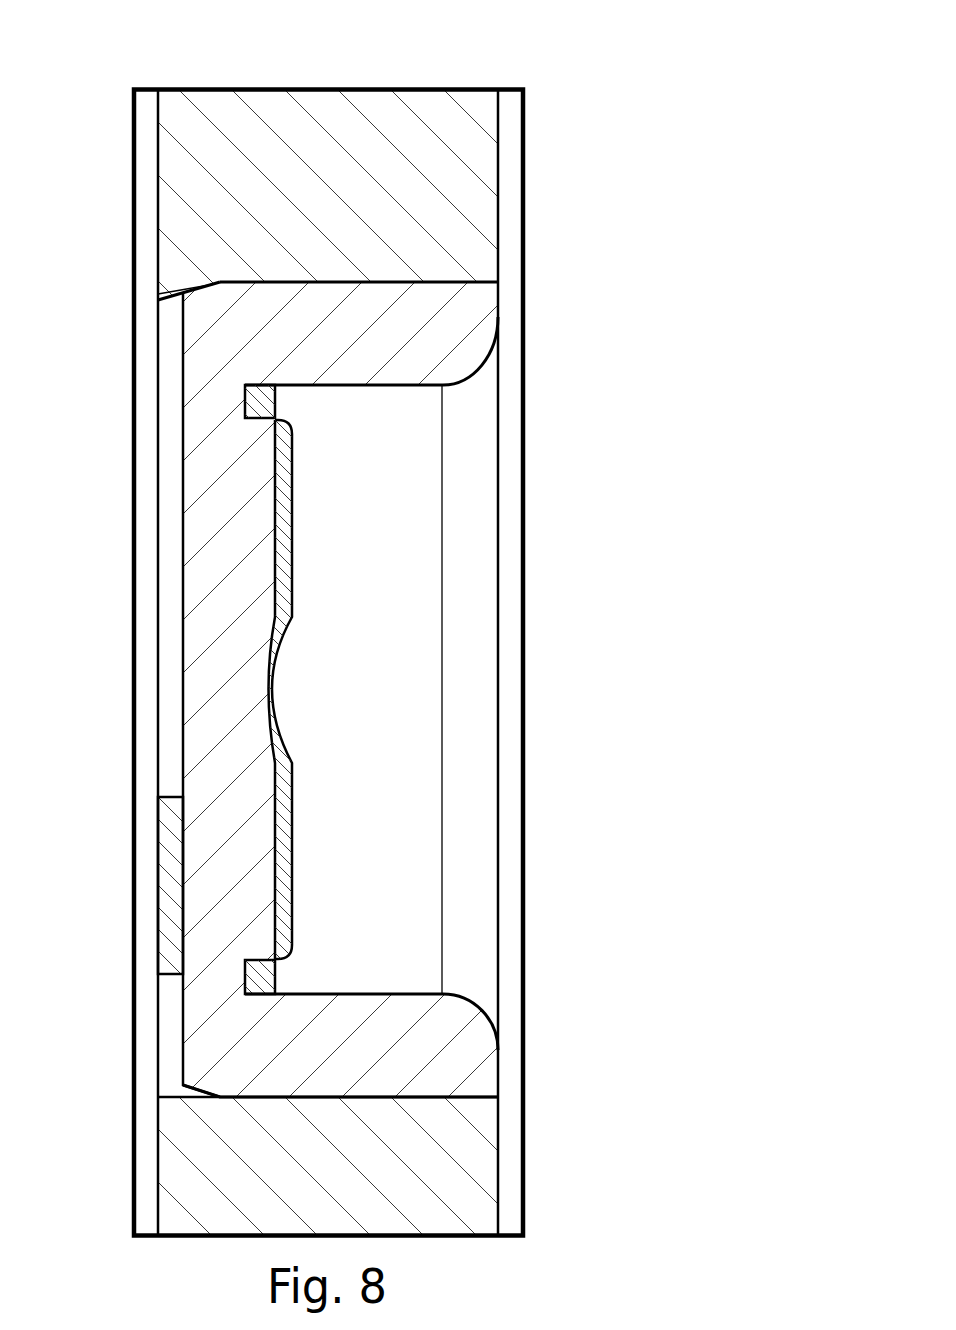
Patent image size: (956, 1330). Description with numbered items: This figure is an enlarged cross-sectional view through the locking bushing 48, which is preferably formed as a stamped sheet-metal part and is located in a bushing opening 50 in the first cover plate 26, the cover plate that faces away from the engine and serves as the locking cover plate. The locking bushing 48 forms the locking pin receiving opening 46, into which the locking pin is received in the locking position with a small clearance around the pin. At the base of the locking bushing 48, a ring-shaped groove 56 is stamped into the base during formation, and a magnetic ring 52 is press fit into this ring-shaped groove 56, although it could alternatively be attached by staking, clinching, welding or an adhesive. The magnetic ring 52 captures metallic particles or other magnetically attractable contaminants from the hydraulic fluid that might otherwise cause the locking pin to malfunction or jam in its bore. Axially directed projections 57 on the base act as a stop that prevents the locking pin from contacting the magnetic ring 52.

The first cover plate 26 is at (353, 112).
The locking bushing 48 is at (458, 313).
The locking pin receiving opening 46 is at (373, 387).
The axially directed projection 57 is at (287, 478).
The ring-shaped groove 56 is at (262, 386).
The magnetic ring 52 is at (260, 980).
The bushing opening 50 is at (373, 1097).